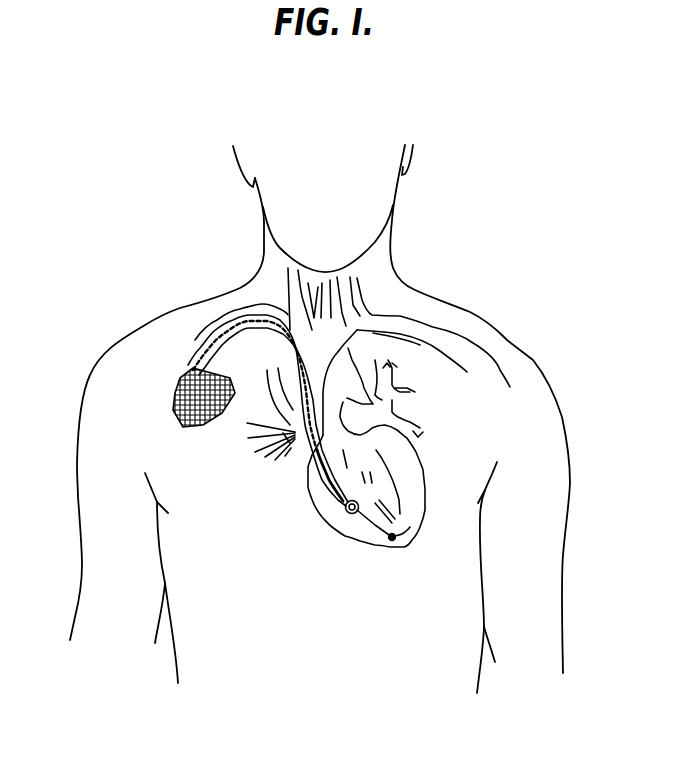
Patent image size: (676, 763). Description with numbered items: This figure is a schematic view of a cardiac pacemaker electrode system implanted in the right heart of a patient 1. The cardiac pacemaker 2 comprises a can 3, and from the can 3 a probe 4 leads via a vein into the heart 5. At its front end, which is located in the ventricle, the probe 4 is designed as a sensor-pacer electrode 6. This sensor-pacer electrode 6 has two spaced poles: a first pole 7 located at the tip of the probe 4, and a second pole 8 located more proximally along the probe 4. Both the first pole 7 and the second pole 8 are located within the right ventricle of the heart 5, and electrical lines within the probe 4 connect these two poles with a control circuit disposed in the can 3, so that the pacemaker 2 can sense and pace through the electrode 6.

The patient 1 is at (535, 359).
The cardiac pacemaker 2 is at (136, 393).
The can 3 is at (177, 402).
The probe 4 is at (223, 325).
The heart 5 is at (332, 527).
The sensor-pacer electrode 6 is at (384, 496).
The first pole 7 is at (391, 541).
The second pole 8 is at (352, 514).